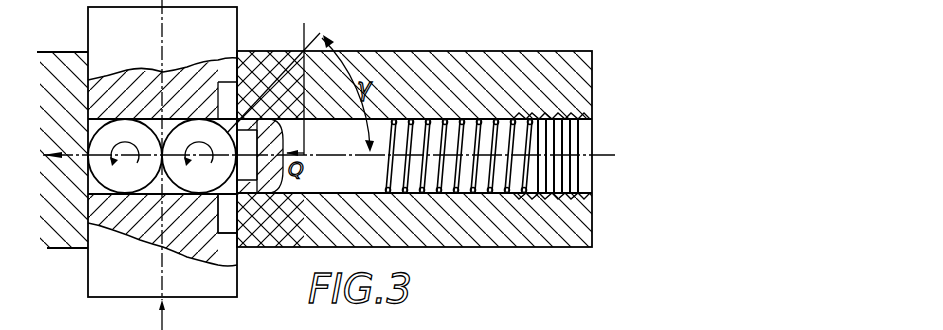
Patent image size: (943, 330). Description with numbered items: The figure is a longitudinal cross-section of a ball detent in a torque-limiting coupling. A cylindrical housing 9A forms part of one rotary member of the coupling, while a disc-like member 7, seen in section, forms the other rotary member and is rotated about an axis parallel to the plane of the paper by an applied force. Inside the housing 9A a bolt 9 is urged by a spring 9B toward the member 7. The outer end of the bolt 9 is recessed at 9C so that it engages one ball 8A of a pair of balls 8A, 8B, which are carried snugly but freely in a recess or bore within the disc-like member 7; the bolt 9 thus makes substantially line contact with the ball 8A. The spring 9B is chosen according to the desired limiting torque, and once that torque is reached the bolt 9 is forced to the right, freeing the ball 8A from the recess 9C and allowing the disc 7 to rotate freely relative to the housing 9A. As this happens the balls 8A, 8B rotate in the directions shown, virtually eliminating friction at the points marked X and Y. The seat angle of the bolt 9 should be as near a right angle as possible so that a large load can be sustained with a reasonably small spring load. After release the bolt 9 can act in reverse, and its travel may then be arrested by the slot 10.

The disc-like member 7 is at (87, 17).
The ball 8A is at (195, 185).
The ball 8B is at (117, 192).
The bolt 9 is at (379, 130).
The cylindrical housing 9A is at (533, 83).
The spring 9B is at (518, 130).
The recess 9C is at (280, 184).
The slot 10 is at (227, 225).
The point X is at (232, 127).
The point Y is at (88, 150).